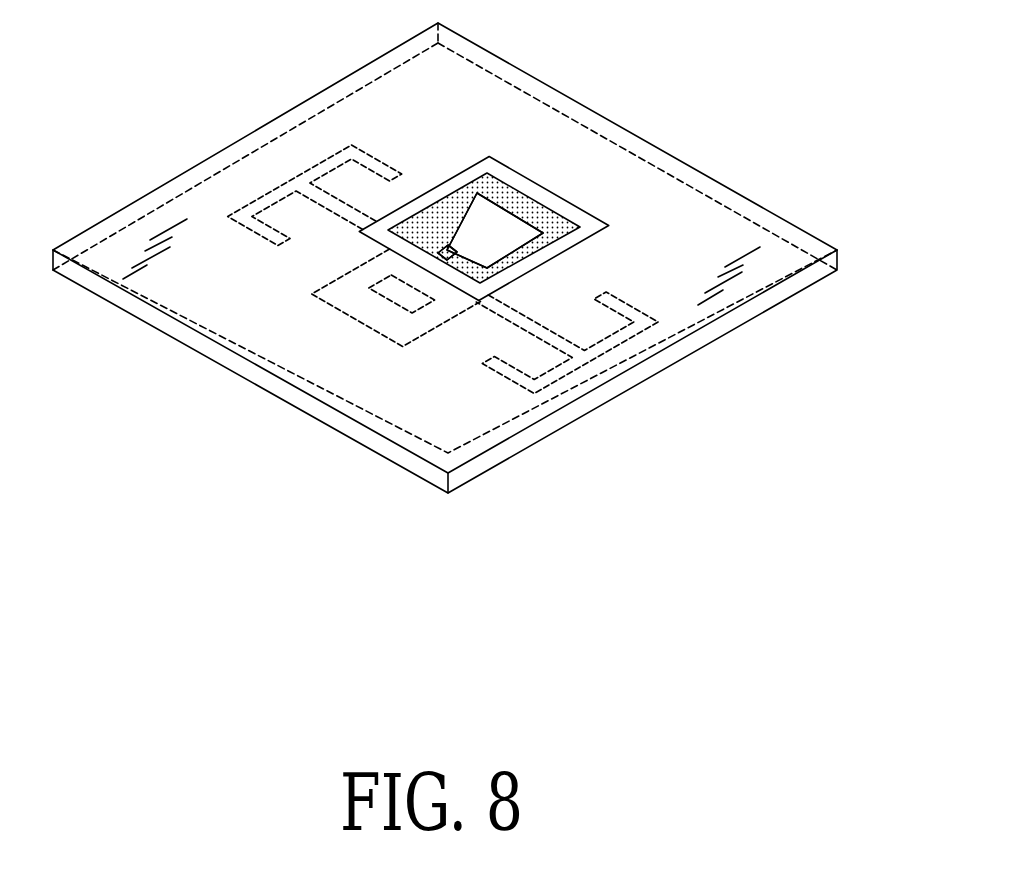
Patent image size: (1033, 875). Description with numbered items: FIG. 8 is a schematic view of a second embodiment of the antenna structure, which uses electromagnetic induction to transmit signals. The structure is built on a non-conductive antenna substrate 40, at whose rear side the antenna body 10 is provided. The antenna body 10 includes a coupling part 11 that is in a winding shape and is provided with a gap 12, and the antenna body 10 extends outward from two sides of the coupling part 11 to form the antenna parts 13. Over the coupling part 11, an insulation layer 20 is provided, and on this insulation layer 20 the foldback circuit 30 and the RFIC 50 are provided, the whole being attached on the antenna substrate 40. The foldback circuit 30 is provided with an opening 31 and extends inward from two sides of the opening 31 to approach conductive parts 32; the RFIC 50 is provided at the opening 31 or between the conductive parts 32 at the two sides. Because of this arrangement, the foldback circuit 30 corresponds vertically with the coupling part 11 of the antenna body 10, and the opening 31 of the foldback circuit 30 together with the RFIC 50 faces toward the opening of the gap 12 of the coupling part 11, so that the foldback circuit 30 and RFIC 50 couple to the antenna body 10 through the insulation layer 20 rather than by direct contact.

The antenna body 10 is at (337, 207).
The coupling part 11 is at (377, 317).
The gap 12 is at (413, 293).
The antenna parts 13 is at (557, 377).
The insulation layer 20 is at (565, 207).
The foldback circuit 30 is at (557, 238).
The opening 31 is at (480, 232).
The conductive parts 32 is at (450, 254).
The antenna substrate 40 is at (447, 77).
The RFIC 50 is at (443, 247).